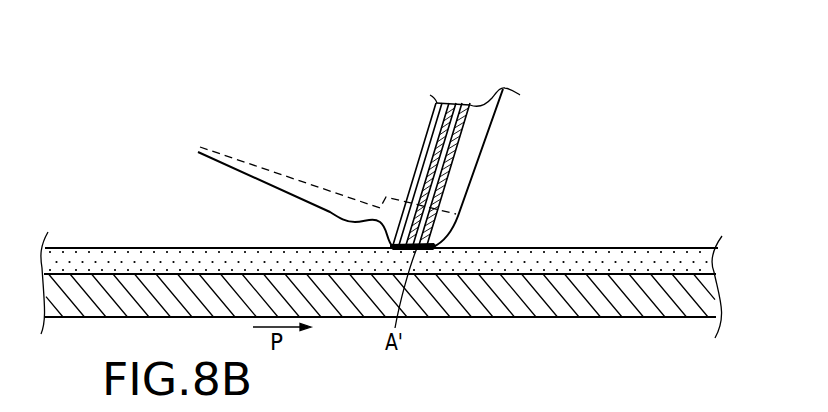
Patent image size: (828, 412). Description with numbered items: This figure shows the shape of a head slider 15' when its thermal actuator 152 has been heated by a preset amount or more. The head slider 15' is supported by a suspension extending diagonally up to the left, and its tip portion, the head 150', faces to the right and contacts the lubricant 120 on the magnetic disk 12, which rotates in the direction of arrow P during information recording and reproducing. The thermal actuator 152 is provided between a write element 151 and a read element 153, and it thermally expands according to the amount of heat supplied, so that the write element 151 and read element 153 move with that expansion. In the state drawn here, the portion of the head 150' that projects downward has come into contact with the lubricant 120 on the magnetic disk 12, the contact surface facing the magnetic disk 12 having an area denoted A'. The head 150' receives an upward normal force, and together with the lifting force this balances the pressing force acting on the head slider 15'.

The head slider 15' is at (504, 145).
The read element 153 is at (437, 120).
The thermal actuator 152 is at (438, 148).
The write element 151 is at (450, 178).
The head 150' is at (381, 219).
The lubricant 120 is at (646, 260).
The magnetic disk 12 is at (612, 310).